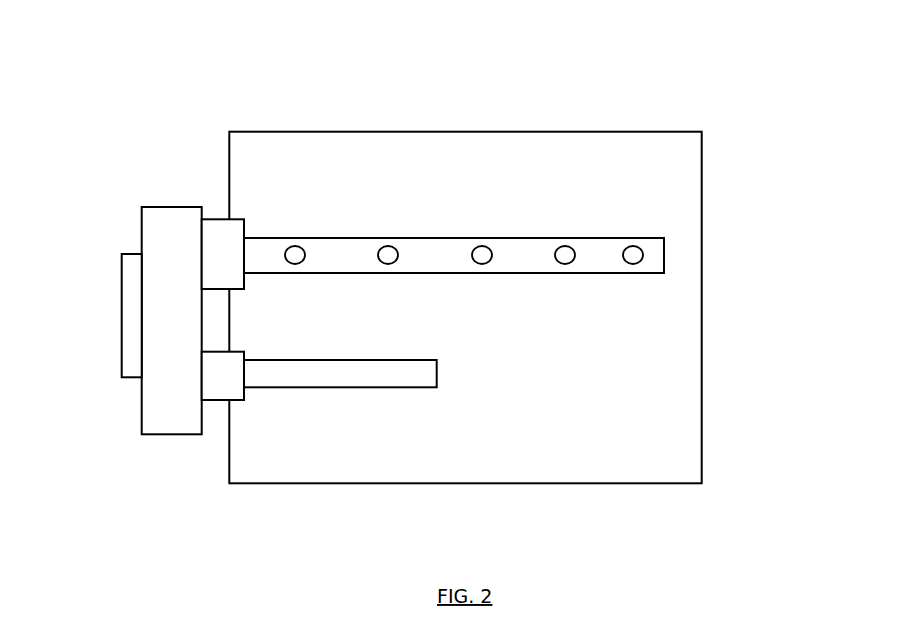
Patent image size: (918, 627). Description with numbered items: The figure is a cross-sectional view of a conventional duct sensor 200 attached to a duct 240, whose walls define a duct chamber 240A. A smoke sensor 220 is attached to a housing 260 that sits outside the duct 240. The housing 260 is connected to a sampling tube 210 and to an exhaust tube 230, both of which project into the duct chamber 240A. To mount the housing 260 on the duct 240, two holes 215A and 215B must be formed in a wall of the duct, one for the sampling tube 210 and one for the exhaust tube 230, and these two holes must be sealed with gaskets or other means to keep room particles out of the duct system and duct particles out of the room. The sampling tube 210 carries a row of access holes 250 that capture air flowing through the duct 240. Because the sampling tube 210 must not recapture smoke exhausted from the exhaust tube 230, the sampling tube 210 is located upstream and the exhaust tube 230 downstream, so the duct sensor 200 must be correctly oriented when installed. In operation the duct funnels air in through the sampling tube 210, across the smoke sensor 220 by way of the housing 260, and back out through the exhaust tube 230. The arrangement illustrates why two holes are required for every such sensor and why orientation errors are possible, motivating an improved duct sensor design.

The duct sensor 200 is at (421, 290).
The sampling tube 210 is at (495, 171).
The hole 215A is at (217, 219).
The hole 215B is at (242, 401).
The smoke sensor 220 is at (122, 377).
The exhaust tube 230 is at (398, 360).
The duct 240 is at (407, 131).
The duct chamber 240A is at (594, 401).
The access holes 250 is at (388, 246).
The housing 260 is at (175, 230).